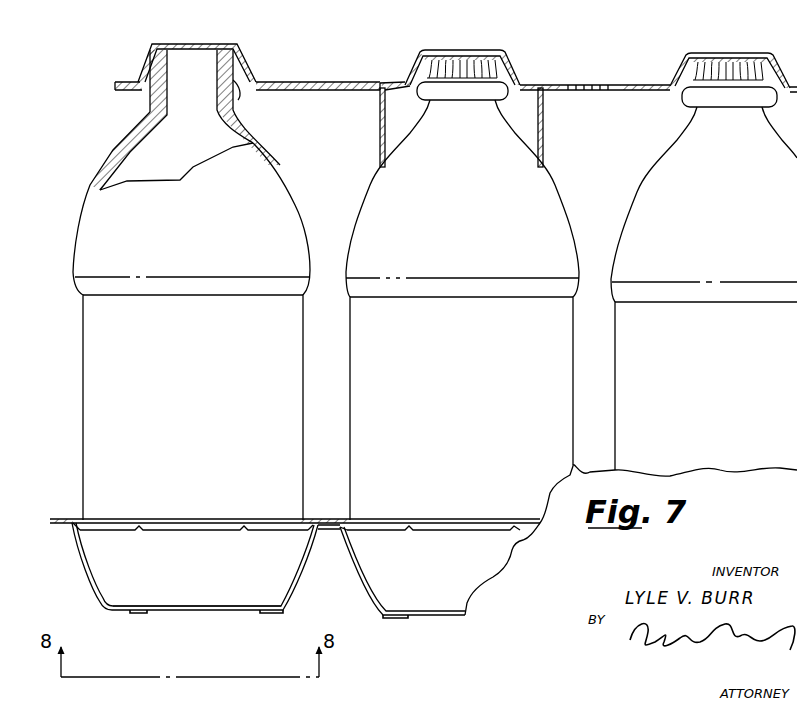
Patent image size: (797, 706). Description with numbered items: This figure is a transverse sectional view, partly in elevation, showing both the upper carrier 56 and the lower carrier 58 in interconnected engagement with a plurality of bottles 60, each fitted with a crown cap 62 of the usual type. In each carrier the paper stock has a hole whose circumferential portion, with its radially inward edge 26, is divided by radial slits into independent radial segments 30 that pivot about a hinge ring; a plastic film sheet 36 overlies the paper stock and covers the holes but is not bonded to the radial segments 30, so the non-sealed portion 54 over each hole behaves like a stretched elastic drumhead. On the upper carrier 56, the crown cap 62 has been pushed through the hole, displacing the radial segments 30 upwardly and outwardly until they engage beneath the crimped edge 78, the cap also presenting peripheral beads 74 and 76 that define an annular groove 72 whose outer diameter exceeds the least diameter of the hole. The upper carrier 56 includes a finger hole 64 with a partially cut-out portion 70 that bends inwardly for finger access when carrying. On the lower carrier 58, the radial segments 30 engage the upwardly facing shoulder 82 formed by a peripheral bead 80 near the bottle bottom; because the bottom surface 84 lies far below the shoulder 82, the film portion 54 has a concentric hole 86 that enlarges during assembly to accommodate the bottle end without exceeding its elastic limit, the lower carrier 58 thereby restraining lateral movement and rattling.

The radially inward edge 26 is at (767, 88).
The radial segments 30 is at (138, 88).
The plastic film sheet 36 is at (172, 44).
The non-sealed portion 54 is at (84, 586).
The upper carrier 56 is at (536, 84).
The lower carrier 58 is at (469, 521).
The bottles 60 is at (356, 214).
The crown cap 62 is at (147, 62).
The finger hole 64 is at (345, 84).
The partially cut-out portion 70 is at (379, 125).
The annular groove 72 is at (219, 72).
The peripheral bead 74 is at (238, 56).
The peripheral bead 76 is at (236, 88).
The crimped edge 78 is at (473, 82).
The peripheral bead 80 is at (74, 532).
The upwardly facing shoulder 82 is at (78, 532).
The bottom surface 84 is at (204, 611).
The concentric hole 86 is at (130, 611).